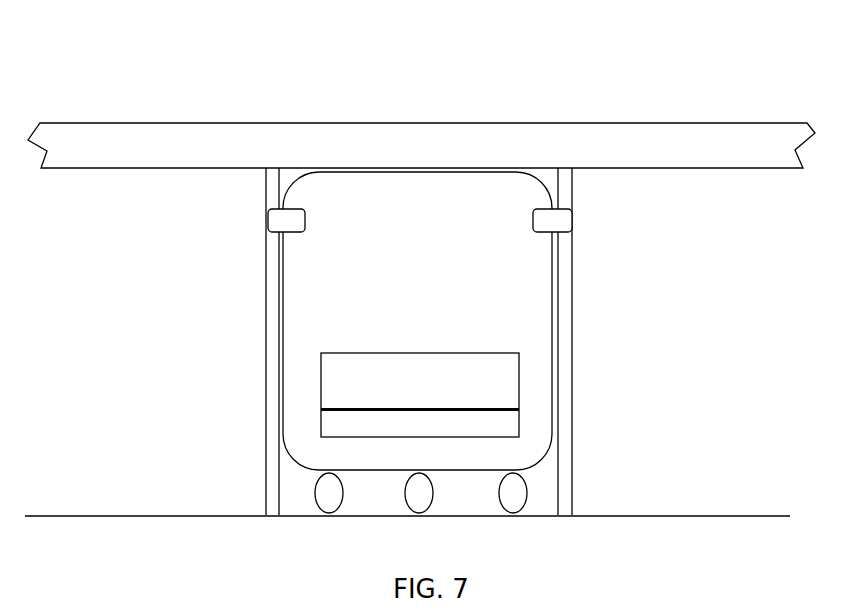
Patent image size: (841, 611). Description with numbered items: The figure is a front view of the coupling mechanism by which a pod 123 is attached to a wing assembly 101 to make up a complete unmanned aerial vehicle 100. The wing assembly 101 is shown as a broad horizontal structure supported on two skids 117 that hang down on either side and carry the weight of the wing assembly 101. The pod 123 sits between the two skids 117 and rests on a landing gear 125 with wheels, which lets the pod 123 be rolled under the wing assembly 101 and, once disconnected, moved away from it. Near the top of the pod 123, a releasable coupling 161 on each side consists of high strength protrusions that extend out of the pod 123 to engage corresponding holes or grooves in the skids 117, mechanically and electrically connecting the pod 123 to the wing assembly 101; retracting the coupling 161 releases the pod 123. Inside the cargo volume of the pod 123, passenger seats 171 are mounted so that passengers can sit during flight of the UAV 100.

The unmanned aerial vehicle 100 is at (515, 83).
The wing assembly 101 is at (328, 135).
The skids 117 is at (268, 372).
The pod 123 is at (292, 310).
The releasable coupling 161 is at (268, 222).
The passenger seats 171 is at (393, 372).
The landing gear 125 is at (328, 505).